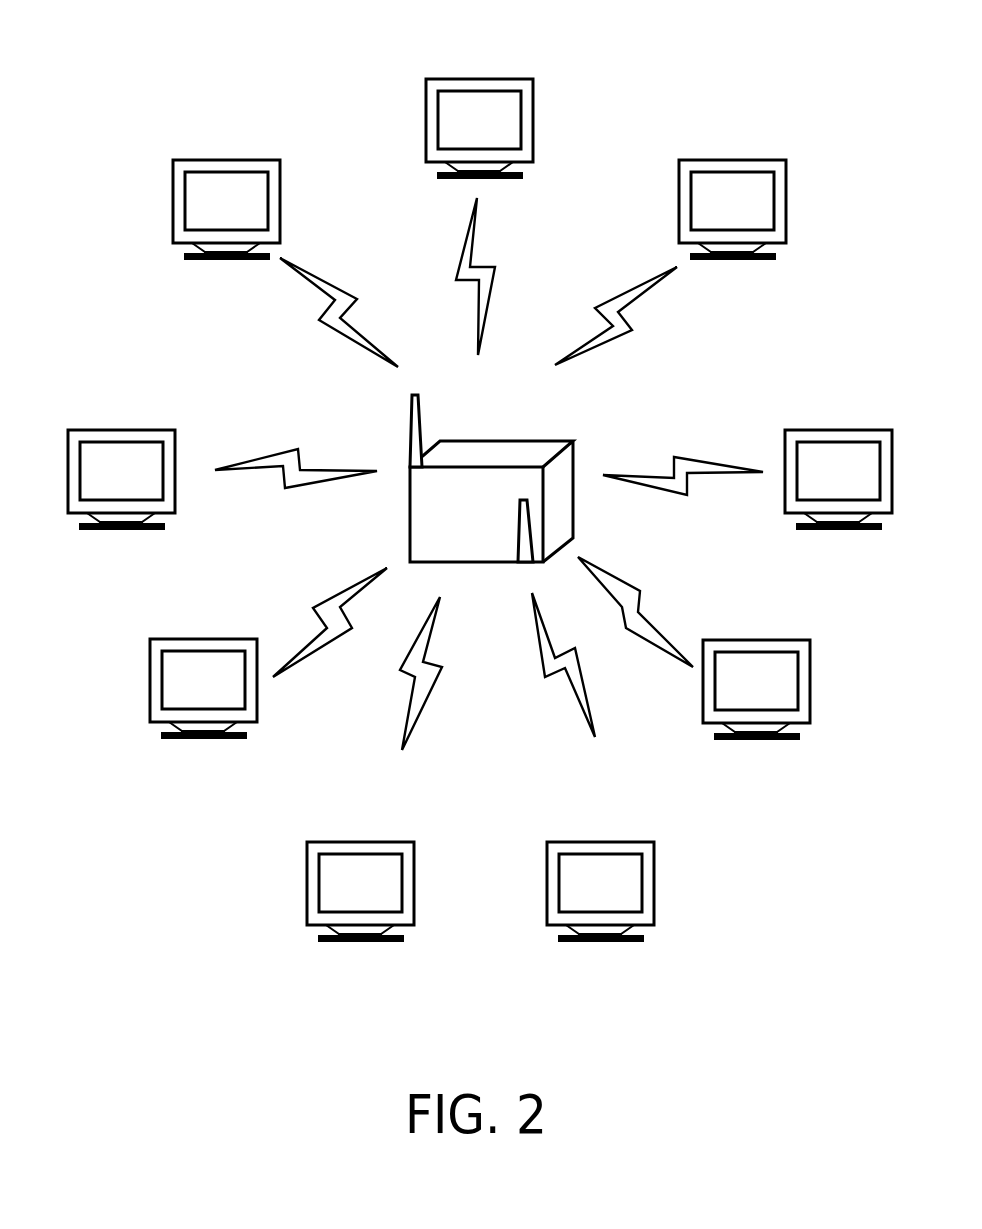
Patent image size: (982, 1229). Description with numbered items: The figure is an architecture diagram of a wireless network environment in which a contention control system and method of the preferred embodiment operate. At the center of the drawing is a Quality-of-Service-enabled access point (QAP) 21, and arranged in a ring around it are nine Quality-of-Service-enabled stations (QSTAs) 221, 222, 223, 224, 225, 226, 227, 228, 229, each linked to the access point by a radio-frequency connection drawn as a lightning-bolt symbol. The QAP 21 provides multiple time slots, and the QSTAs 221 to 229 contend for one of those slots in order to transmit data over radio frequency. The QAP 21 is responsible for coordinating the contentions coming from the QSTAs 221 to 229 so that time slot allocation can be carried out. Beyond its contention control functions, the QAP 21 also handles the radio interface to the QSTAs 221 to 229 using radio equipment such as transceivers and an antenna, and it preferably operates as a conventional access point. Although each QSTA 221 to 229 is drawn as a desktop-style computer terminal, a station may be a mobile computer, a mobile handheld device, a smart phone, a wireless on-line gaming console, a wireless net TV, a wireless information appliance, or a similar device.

The Quality-of-Service-enabled access point (QAP) 21 is at (507, 441).
The Quality-of-Service-enabled station (QSTA) 221 is at (732, 160).
The Quality-of-Service-enabled station (QSTA) 222 is at (839, 430).
The Quality-of-Service-enabled station (QSTA) 223 is at (756, 640).
The Quality-of-Service-enabled station (QSTA) 224 is at (600, 842).
The Quality-of-Service-enabled station (QSTA) 225 is at (361, 842).
The Quality-of-Service-enabled station (QSTA) 226 is at (204, 639).
The Quality-of-Service-enabled station (QSTA) 227 is at (121, 430).
The Quality-of-Service-enabled station (QSTA) 228 is at (226, 160).
The Quality-of-Service-enabled station (QSTA) 229 is at (479, 79).